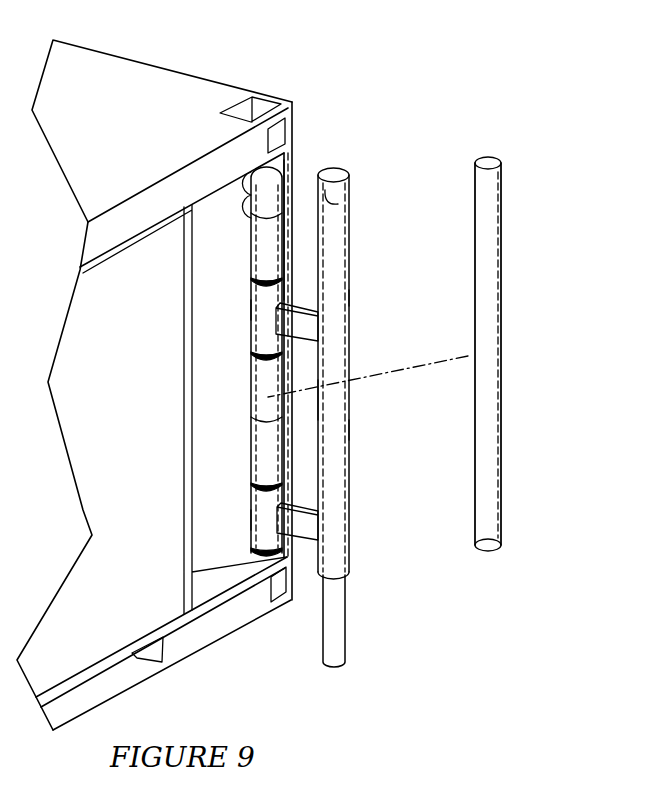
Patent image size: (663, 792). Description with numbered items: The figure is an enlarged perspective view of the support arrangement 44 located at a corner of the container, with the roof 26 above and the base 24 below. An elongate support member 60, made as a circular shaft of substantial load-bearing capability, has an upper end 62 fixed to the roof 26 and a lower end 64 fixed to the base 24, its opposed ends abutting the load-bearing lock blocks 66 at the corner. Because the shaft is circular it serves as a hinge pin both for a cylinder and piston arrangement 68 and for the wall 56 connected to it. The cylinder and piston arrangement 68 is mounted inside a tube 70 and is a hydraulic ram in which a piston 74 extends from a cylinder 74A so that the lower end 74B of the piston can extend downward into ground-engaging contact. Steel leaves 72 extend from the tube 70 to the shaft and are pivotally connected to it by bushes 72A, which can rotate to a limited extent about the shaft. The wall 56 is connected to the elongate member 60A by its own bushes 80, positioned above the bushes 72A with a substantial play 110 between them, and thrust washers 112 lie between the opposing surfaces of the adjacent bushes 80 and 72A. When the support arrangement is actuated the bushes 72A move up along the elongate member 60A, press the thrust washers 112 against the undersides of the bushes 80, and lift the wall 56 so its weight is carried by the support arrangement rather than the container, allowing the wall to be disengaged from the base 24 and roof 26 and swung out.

The roof 26 is at (148, 98).
The lock blocks 66 is at (260, 102).
The upper end 62 is at (298, 150).
The elongate member 60A is at (306, 157).
The wall 56 is at (233, 392).
The bushes 80 is at (266, 243).
The thrust washers 112 is at (256, 282).
The play 110 is at (238, 187).
The bushes 72A is at (251, 311).
The steel leaves 72 is at (300, 323).
The piston 74 is at (392, 418).
The cylinder 74A is at (335, 258).
The lower end 74B is at (337, 632).
The tube 70 is at (338, 405).
The cylinder and piston arrangement 68 is at (362, 430).
The support arrangement 44 is at (385, 298).
The base 24 is at (217, 642).
The elongate support member 60 is at (500, 220).
The lower end 64 is at (490, 547).